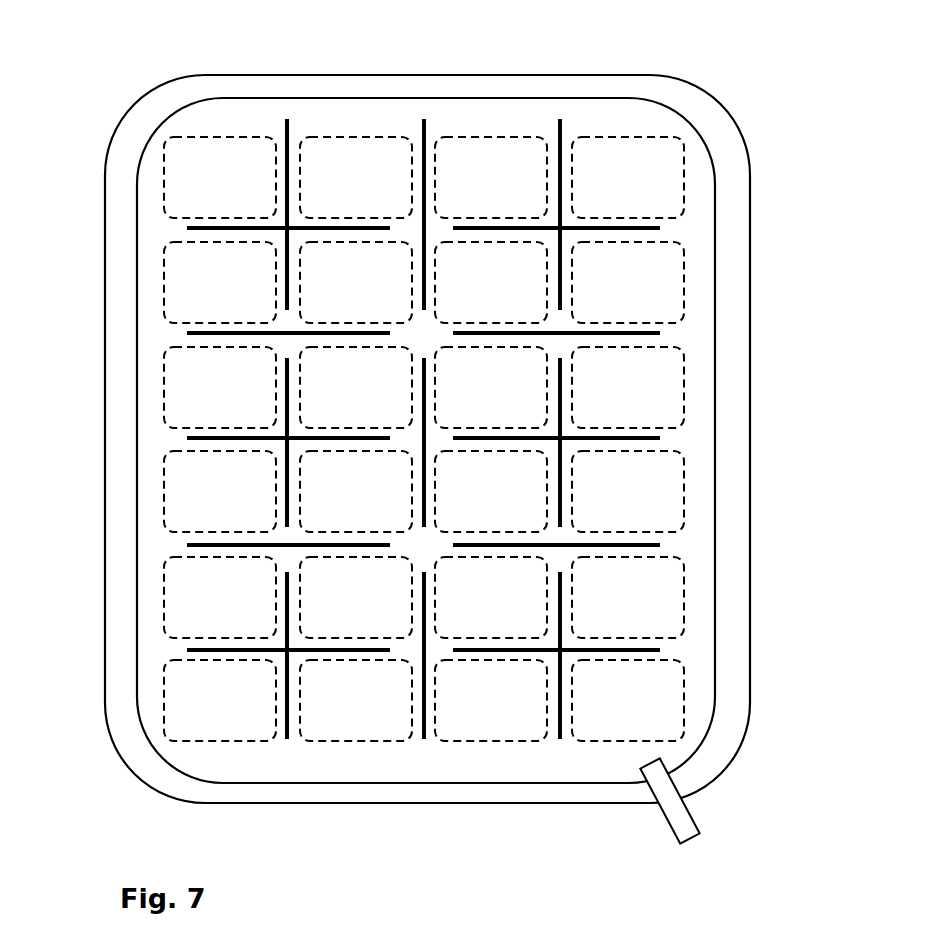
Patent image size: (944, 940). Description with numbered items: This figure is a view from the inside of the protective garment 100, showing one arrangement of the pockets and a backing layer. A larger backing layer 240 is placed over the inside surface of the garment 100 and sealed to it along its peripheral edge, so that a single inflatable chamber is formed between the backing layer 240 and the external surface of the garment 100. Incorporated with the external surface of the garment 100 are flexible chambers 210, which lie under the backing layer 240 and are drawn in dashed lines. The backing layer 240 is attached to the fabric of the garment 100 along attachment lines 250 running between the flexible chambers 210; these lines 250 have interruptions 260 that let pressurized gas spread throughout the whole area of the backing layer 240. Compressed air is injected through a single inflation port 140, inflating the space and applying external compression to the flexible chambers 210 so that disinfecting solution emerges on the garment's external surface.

The protective garment 100 is at (428, 459).
The inflation port 140 is at (670, 826).
The flexible chambers 210 is at (426, 439).
The backing layer 240 is at (717, 204).
The attachment lines 250 is at (647, 330).
The interruptions 260 is at (562, 343).